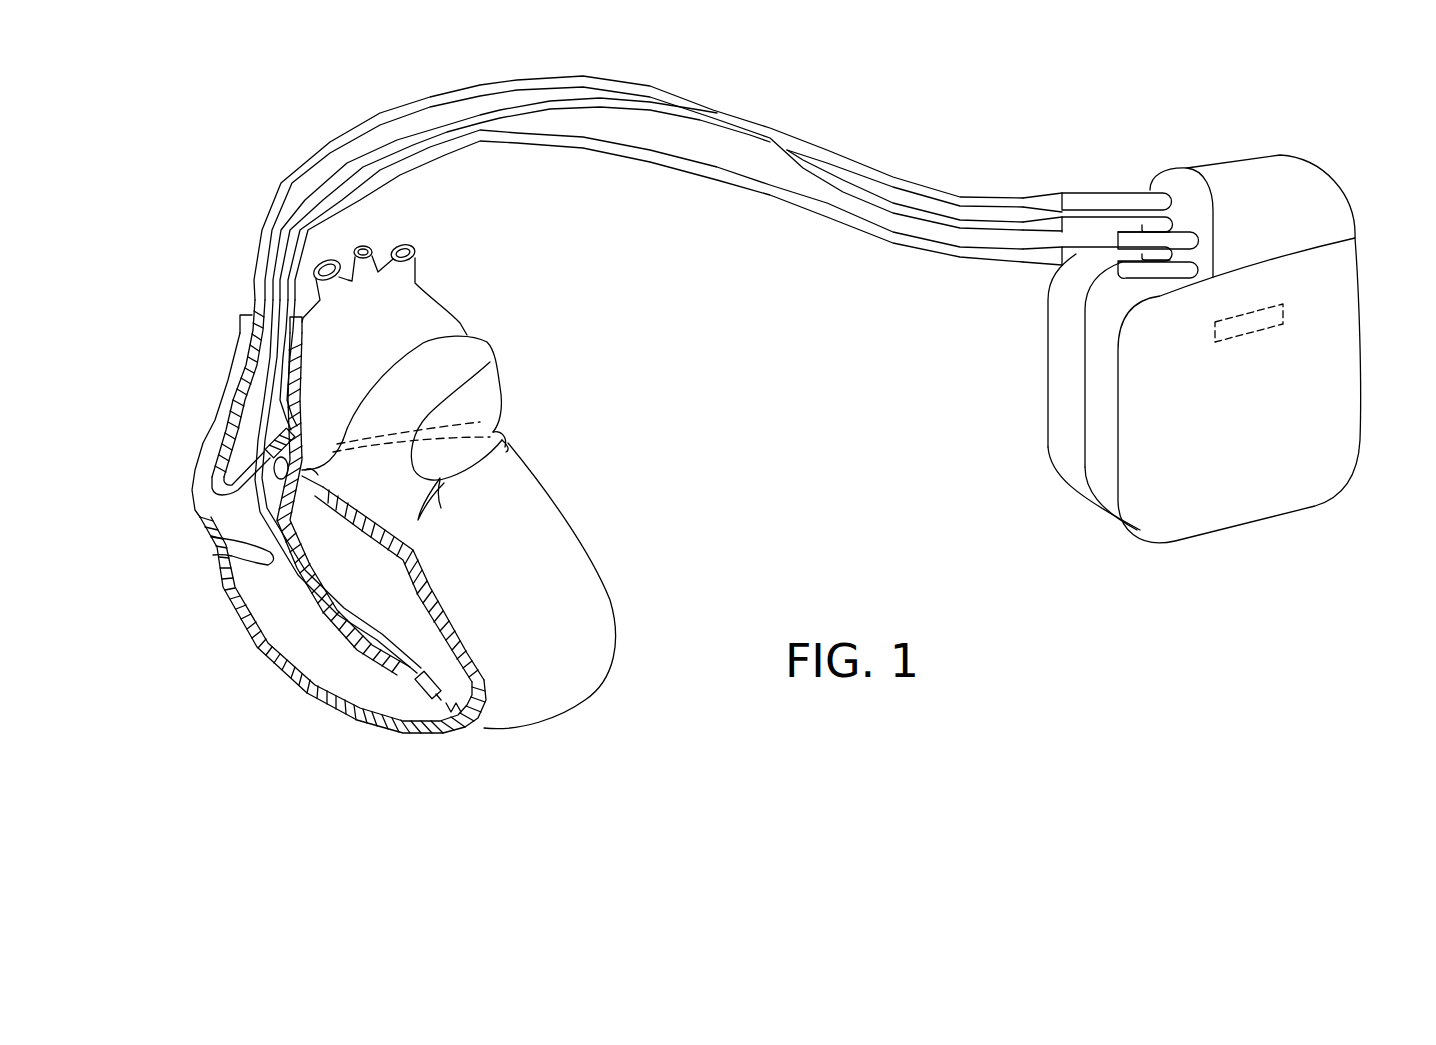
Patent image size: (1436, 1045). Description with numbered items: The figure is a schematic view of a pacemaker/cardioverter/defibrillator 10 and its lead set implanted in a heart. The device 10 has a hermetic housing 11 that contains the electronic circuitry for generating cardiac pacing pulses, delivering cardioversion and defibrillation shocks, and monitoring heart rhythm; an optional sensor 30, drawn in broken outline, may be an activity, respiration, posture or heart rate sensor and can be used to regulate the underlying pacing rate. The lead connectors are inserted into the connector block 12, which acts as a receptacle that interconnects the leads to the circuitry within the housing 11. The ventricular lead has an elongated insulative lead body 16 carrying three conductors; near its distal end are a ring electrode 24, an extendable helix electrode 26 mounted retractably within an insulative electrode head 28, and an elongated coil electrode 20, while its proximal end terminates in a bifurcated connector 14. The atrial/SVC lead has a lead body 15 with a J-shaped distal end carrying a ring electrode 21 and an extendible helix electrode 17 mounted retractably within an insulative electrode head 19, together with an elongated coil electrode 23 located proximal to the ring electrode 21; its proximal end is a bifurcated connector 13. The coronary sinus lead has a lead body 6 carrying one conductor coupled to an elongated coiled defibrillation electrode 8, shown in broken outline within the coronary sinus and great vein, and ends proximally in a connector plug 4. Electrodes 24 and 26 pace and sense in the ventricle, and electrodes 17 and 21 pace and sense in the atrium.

The connector plug 4 is at (1073, 195).
The lead body 6 is at (903, 180).
The coiled defibrillation electrode 8 is at (490, 413).
The pacemaker/cardioverter/defibrillator 10 is at (1380, 378).
The housing 11 is at (1271, 500).
The connector block 12 is at (1257, 182).
The bifurcated connector 13 is at (1131, 228).
The bifurcated connector 14 is at (1060, 268).
The lead body 15 is at (863, 188).
The lead body 16 is at (850, 217).
The extendible helix electrode 17 is at (297, 431).
The insulative electrode head 19 is at (263, 423).
The elongated coil electrode 20 is at (328, 610).
The ring electrode 21 is at (212, 480).
The elongated coil electrode 23 is at (242, 362).
The ring electrode 24 is at (403, 677).
The extendable helix electrode 26 is at (455, 710).
The insulative electrode head 28 is at (430, 693).
The sensor 30 is at (1215, 338).